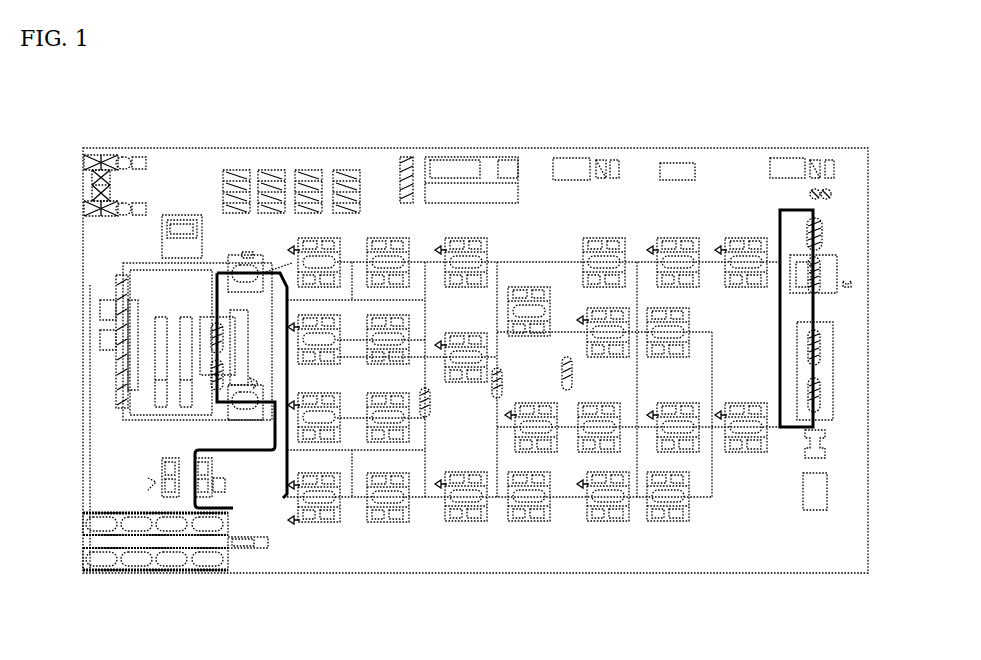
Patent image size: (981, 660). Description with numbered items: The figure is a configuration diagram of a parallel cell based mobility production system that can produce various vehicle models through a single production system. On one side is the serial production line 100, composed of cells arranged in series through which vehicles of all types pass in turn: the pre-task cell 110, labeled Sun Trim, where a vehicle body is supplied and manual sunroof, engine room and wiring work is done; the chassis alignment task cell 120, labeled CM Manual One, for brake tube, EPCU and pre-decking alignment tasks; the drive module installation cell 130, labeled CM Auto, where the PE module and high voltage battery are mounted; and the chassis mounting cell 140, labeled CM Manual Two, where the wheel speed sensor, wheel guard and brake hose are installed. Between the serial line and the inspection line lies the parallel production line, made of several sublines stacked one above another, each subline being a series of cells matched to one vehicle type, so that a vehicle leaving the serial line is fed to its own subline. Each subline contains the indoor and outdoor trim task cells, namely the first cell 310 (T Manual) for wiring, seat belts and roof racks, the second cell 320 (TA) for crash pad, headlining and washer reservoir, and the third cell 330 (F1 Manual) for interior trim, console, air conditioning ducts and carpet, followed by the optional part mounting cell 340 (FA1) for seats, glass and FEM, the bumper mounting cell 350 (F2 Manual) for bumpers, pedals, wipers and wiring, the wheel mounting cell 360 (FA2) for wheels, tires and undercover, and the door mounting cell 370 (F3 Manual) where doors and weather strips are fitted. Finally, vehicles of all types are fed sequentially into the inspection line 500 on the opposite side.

The serial production line 100 is at (233, 510).
The pre-task cell 110 is at (148, 485).
The chassis alignment task cell 120 is at (230, 407).
The drive module installation cell 130 is at (213, 333).
The chassis mounting cell 140 is at (228, 253).
The first cell 310 is at (299, 247).
The second cell 320 is at (366, 225).
The third cell 330 is at (443, 243).
The optional part mounting cell 340 is at (515, 285).
The bumper mounting cell 350 is at (653, 253).
The wheel mounting cell 360 is at (690, 337).
The door mounting cell 370 is at (763, 253).
The inspection line 500 is at (838, 272).